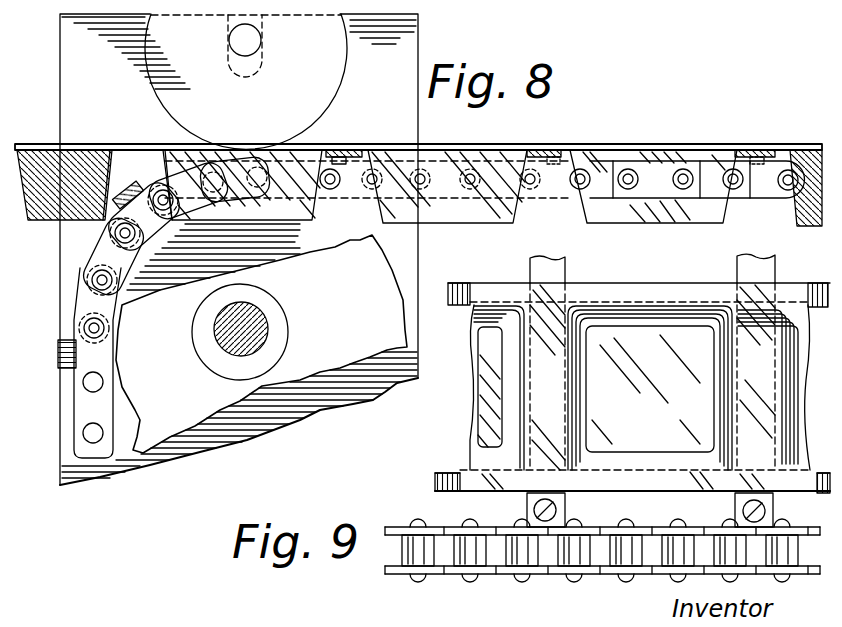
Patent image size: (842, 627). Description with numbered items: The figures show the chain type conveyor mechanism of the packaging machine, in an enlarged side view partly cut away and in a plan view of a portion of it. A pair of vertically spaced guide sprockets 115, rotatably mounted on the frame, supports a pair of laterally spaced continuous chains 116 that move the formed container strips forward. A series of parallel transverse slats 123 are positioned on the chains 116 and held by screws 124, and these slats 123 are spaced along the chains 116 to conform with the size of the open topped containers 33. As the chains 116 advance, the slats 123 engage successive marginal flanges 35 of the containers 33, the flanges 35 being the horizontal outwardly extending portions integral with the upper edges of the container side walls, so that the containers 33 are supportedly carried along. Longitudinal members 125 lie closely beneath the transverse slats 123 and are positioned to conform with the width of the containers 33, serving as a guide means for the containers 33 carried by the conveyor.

In FIG. 8, the open topped containers 33 is at (46, 222).
In FIG. 9, the open topped containers 33 is at (660, 404).
In FIG. 8, the marginal flanges 35 is at (680, 145).
In FIG. 9, the marginal flanges 35 is at (494, 290).
In FIG. 8, the guide sprockets 115 is at (314, 262).
In FIG. 8, the continuous chains 116 is at (764, 200).
In FIG. 9, the continuous chains 116 is at (488, 580).
In FIG. 8, the transverse slats 123 is at (360, 149).
In FIG. 9, the transverse slats 123 is at (566, 278).
In FIG. 8, the screws 124 is at (336, 146).
In FIG. 9, the screws 124 is at (530, 510).
In FIG. 9, the longitudinal members 125 is at (646, 292).